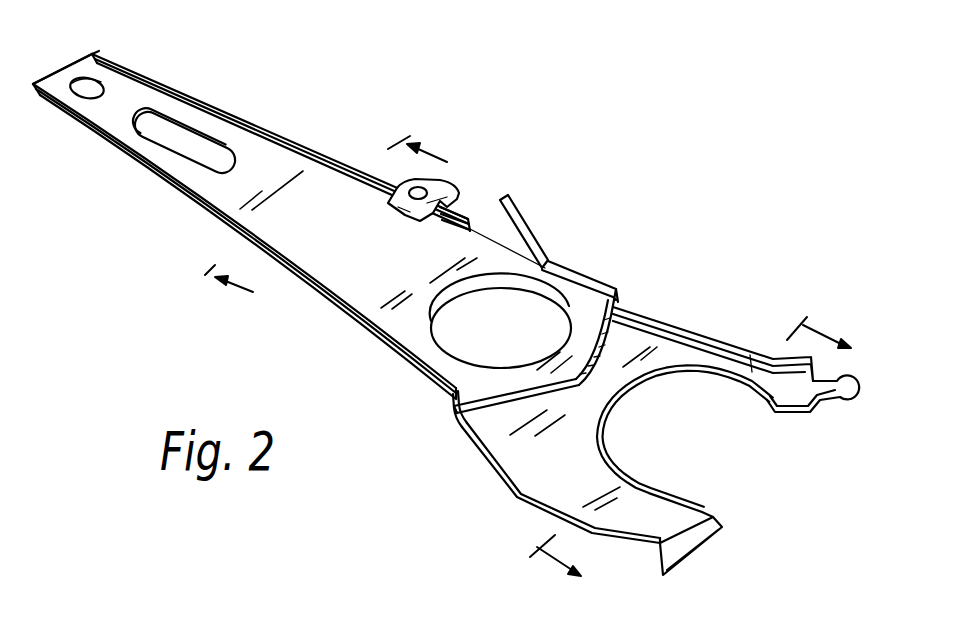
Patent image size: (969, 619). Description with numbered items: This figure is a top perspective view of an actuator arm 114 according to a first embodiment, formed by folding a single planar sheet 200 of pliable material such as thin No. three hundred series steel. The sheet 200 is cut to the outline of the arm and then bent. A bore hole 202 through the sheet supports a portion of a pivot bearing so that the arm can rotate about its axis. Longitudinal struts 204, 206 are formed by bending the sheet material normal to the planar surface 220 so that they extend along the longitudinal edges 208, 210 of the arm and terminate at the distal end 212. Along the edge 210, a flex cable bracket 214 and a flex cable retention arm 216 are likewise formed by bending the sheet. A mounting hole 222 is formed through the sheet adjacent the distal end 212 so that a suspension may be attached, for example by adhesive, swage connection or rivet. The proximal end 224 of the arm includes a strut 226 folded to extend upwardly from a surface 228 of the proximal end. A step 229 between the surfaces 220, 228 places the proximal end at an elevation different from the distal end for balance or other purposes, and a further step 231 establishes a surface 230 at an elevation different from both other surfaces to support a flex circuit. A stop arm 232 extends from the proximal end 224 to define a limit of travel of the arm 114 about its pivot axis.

The actuator arm 114 is at (236, 342).
The planar sheet 200 is at (407, 367).
The bore hole 202 is at (533, 317).
The longitudinal strut 204 is at (128, 145).
The longitudinal strut 206 is at (175, 97).
The longitudinal edge 208 is at (235, 133).
The longitudinal edge 210 is at (300, 143).
The distal end 212 is at (62, 78).
The flex cable bracket 214 is at (457, 182).
The flex cable retention arm 216 is at (517, 203).
The planar surface 220 is at (390, 317).
The mounting hole 222 is at (100, 83).
The proximal end 224 is at (713, 547).
The strut 226 is at (638, 383).
The surface 228 is at (503, 447).
The step 229 is at (480, 410).
The surface 230 is at (698, 330).
The step 231 is at (707, 347).
The stop arm 232 is at (847, 392).